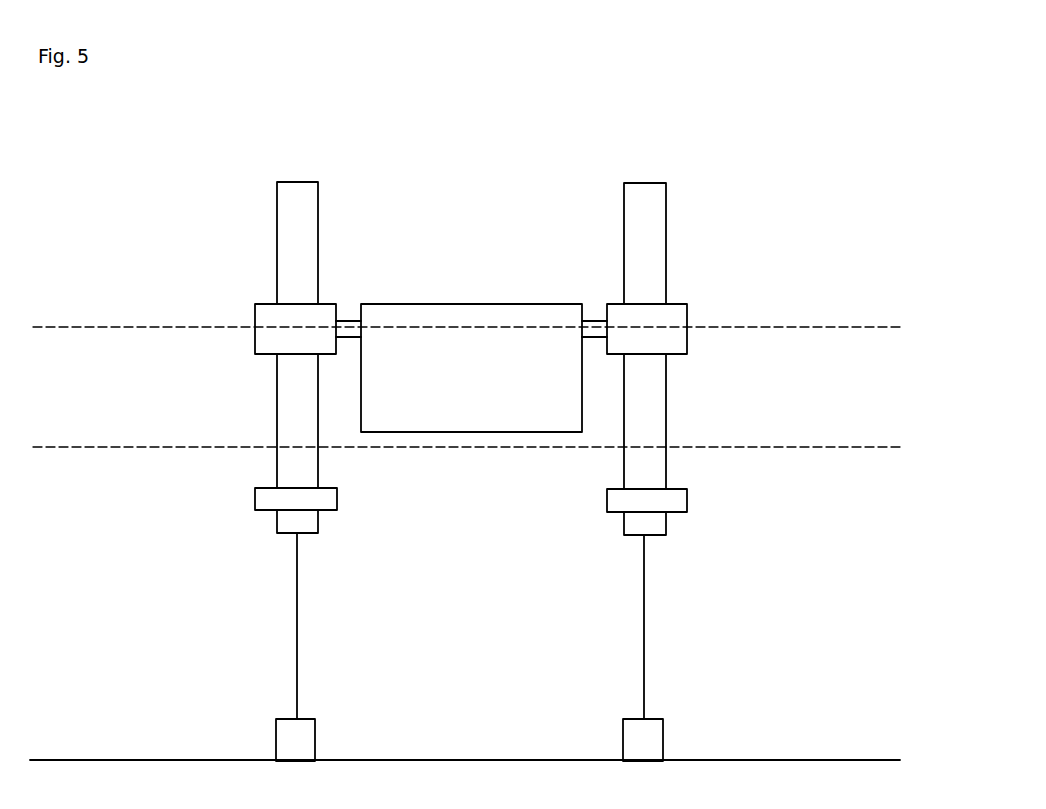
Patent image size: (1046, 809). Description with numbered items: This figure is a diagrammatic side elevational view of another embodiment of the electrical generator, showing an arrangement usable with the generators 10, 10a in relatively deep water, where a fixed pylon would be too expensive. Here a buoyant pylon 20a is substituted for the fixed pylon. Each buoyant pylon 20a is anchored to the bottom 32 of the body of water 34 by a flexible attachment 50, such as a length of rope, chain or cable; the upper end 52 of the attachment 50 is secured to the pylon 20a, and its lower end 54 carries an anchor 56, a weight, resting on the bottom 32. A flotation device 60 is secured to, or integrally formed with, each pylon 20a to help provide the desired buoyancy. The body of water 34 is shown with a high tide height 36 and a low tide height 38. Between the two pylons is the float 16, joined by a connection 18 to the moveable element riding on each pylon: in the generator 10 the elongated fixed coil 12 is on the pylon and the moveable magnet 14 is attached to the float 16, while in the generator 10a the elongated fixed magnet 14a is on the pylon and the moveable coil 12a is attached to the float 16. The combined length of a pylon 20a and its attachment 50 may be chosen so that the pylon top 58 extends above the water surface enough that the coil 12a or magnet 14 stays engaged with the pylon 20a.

The electrical generator 10 is at (466, 426).
The generator 10a is at (147, 150).
The electrical coil 12 is at (472, 313).
The elongated fixed magnet 14a is at (285, 272).
The moveable electrical coil 12a is at (460, 305).
The moveable magnet 14 is at (256, 305).
The float 16 is at (438, 318).
The connection 18 is at (345, 316).
The buoyant pylon 20a is at (285, 215).
The bottom 32 is at (101, 760).
The body of water 34 is at (790, 390).
The high tide height 36 is at (808, 328).
The low tide height 38 is at (808, 447).
The flexible attachment 50 is at (298, 626).
The upper end 52 is at (298, 552).
The lower end 54 is at (297, 707).
The anchor 56 is at (305, 738).
The top 58 is at (300, 182).
The flotation device 60 is at (256, 503).